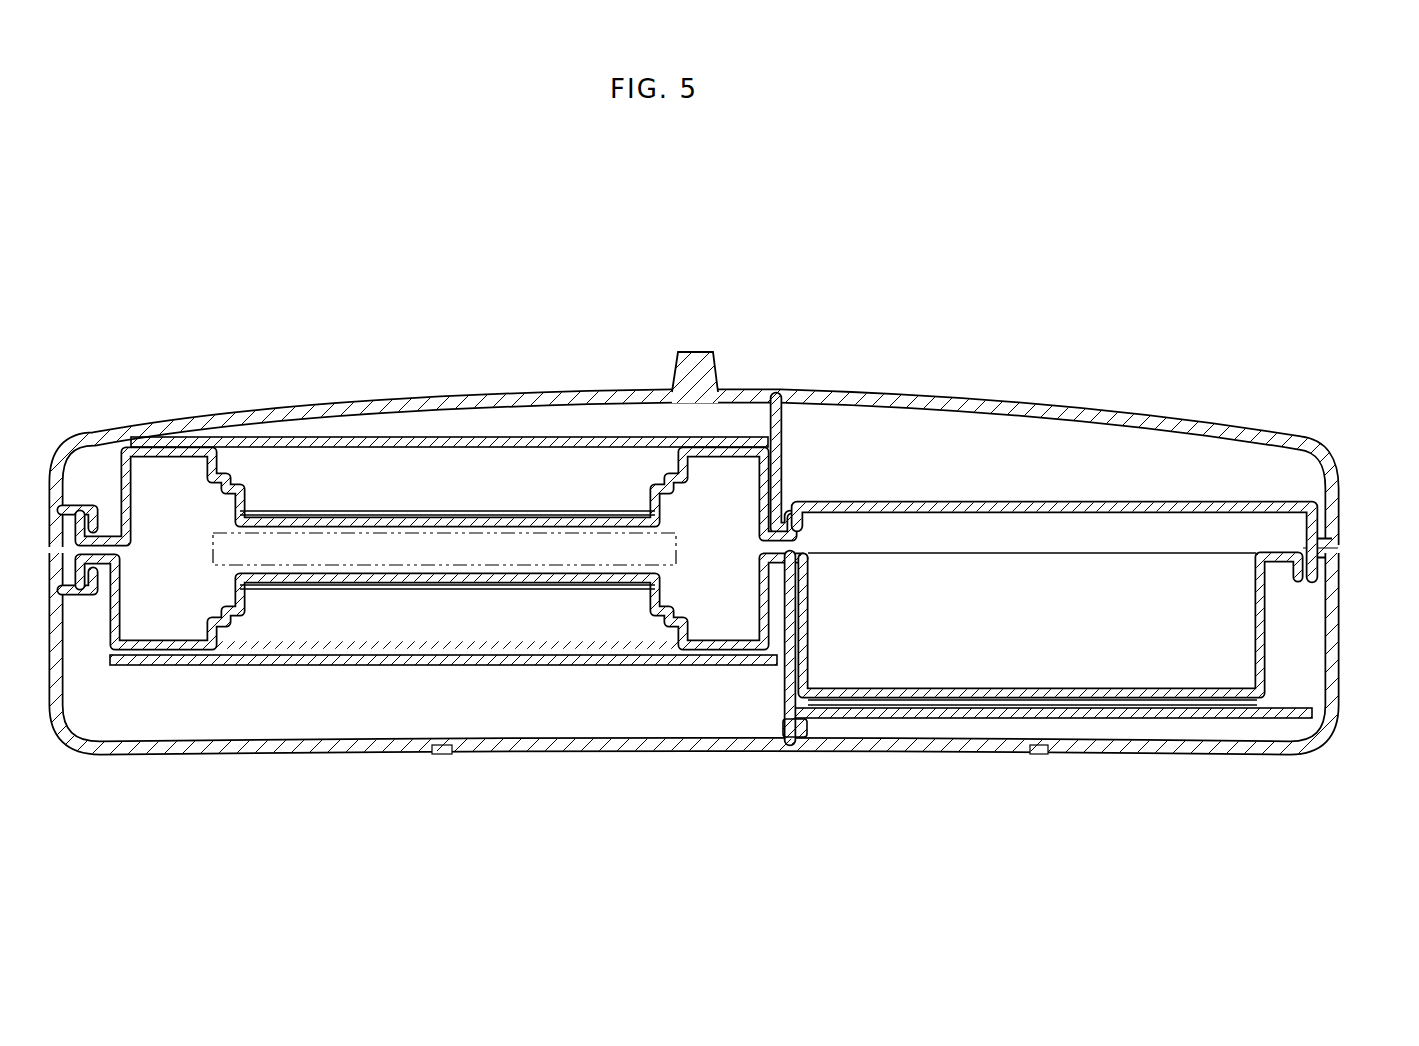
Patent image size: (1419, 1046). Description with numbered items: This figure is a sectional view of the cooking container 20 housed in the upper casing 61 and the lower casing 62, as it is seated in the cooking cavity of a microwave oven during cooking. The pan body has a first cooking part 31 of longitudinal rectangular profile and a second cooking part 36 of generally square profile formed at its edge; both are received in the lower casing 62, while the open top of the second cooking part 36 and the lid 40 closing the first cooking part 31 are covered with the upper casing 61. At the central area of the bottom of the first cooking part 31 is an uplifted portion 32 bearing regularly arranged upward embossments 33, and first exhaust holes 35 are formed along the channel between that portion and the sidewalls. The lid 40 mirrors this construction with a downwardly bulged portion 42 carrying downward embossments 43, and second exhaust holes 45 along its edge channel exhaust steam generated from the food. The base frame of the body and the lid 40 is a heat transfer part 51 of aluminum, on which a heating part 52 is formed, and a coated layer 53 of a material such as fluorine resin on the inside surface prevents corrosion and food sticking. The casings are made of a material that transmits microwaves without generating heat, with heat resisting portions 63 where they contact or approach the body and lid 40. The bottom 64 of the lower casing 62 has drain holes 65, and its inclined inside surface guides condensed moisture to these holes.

The cooking container 20 is at (824, 331).
The first cooking part 31 is at (113, 614).
The uplifted portion 32 is at (693, 609).
The upward embossments 33 is at (210, 583).
The first exhaust holes 35 is at (175, 651).
The second cooking part 36 is at (1278, 611).
The lid 40 is at (193, 448).
The bulged portion 42 is at (692, 494).
The downward embossments 43 is at (211, 526).
The second exhaust holes 45 is at (175, 447).
The heat transfer part 51 is at (786, 672).
The heating part 52 is at (398, 509).
The coated layer 53 is at (756, 476).
The upper casing 61 is at (1000, 408).
The lower casing 62 is at (1334, 648).
The portions 63 is at (578, 436).
The bottom 64 is at (630, 752).
The drain holes 65 is at (440, 755).